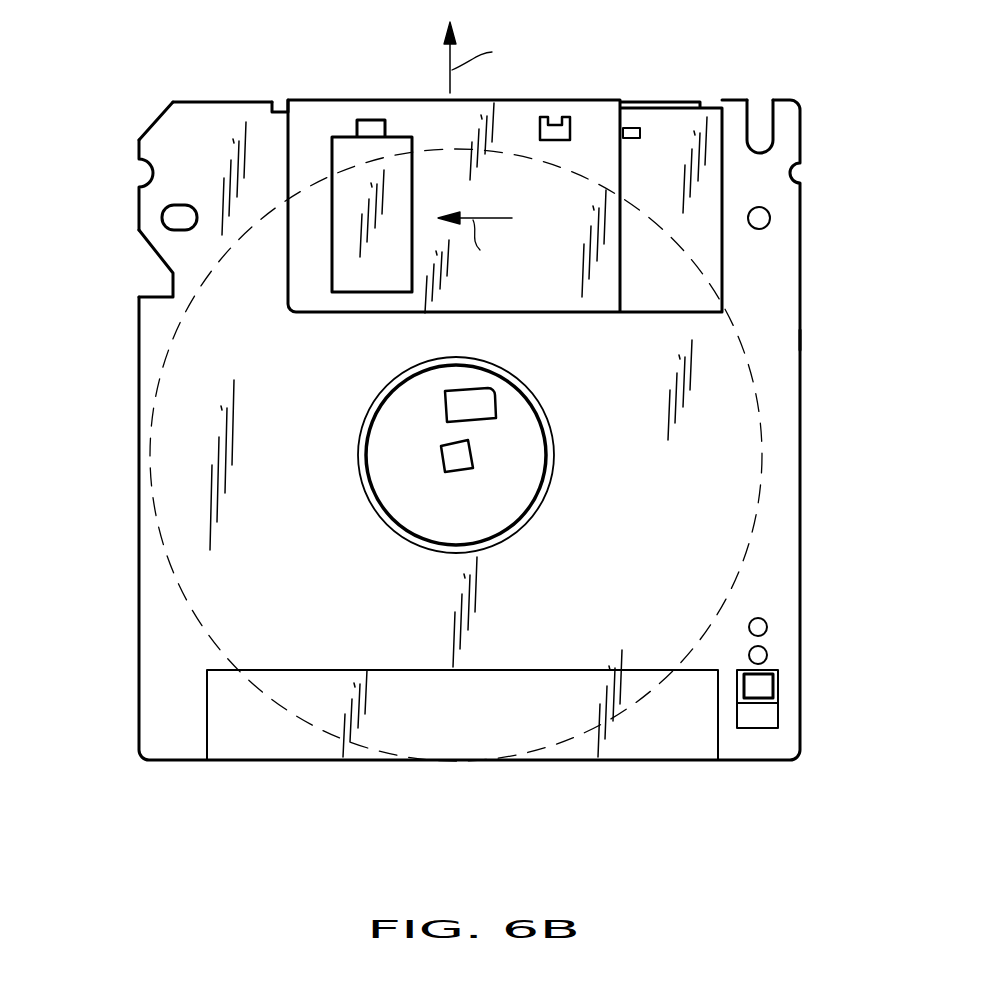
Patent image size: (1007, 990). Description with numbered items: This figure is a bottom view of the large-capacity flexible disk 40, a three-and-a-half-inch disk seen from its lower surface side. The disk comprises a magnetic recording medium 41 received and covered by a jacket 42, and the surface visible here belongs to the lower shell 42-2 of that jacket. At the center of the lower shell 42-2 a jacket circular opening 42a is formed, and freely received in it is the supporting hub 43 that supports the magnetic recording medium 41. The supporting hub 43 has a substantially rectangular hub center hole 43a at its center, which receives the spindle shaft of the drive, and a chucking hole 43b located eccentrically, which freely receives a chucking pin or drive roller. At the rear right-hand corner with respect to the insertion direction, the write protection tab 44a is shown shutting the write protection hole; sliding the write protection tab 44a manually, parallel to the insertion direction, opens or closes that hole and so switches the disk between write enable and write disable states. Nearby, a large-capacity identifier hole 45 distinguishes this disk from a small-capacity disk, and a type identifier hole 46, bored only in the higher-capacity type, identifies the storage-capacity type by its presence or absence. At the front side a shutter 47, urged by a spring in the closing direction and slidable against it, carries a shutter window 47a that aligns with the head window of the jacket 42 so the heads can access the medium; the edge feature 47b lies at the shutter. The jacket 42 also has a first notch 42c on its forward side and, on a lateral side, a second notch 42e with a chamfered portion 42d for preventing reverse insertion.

The large-capacity flexible disk 40 is at (471, 423).
The magnetic recording medium 41 is at (752, 547).
The jacket 42 is at (457, 395).
The lower shell 42-2 is at (800, 340).
The jacket circular opening 42a is at (546, 493).
The first notch 42c is at (760, 108).
The chamfered portion 42d is at (158, 112).
The second notch 42e is at (150, 281).
The supporting hub 43 is at (488, 466).
The hub center hole 43a is at (452, 466).
The chucking hole 43b is at (478, 402).
The write protection tab 44a is at (758, 686).
The large-capacity identifier hole 45 is at (767, 652).
The type identifier hole 46 is at (748, 628).
The shutter 47 is at (484, 208).
The shutter window 47a is at (356, 294).
The shutter notch 47b is at (288, 102).